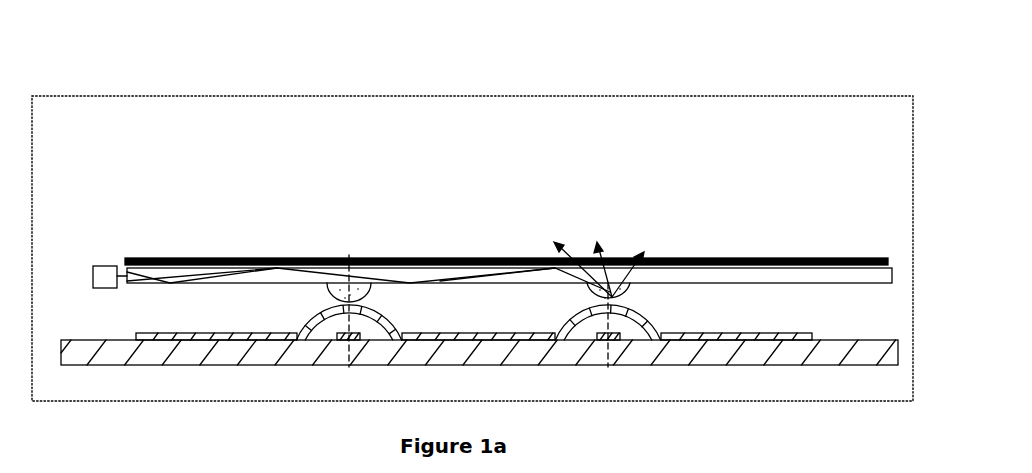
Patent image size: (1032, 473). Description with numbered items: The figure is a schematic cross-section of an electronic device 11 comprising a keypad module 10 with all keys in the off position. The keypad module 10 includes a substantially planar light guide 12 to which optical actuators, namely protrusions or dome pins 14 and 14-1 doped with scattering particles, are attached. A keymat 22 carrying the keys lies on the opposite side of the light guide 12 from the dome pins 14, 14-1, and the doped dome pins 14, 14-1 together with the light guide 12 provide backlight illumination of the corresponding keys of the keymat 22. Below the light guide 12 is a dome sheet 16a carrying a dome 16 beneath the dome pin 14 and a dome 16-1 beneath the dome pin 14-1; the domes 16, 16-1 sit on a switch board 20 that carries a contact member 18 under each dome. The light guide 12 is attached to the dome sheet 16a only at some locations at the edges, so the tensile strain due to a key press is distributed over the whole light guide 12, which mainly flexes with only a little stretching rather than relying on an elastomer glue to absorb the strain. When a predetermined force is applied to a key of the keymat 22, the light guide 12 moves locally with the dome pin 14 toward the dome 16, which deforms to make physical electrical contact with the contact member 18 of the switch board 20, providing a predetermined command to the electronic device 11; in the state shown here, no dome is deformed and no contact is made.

The keypad module 10 is at (333, 198).
The electronic device 11 is at (480, 97).
The light guide 12 is at (762, 277).
The dome pin 14 is at (646, 250).
The dome pin 14-1 is at (363, 285).
The dome 16 is at (631, 308).
The dome 16-1 is at (315, 317).
The dome sheet 16a is at (768, 338).
The contact member 18 is at (612, 342).
The switch board 20 is at (715, 355).
The keymat 22 is at (480, 258).